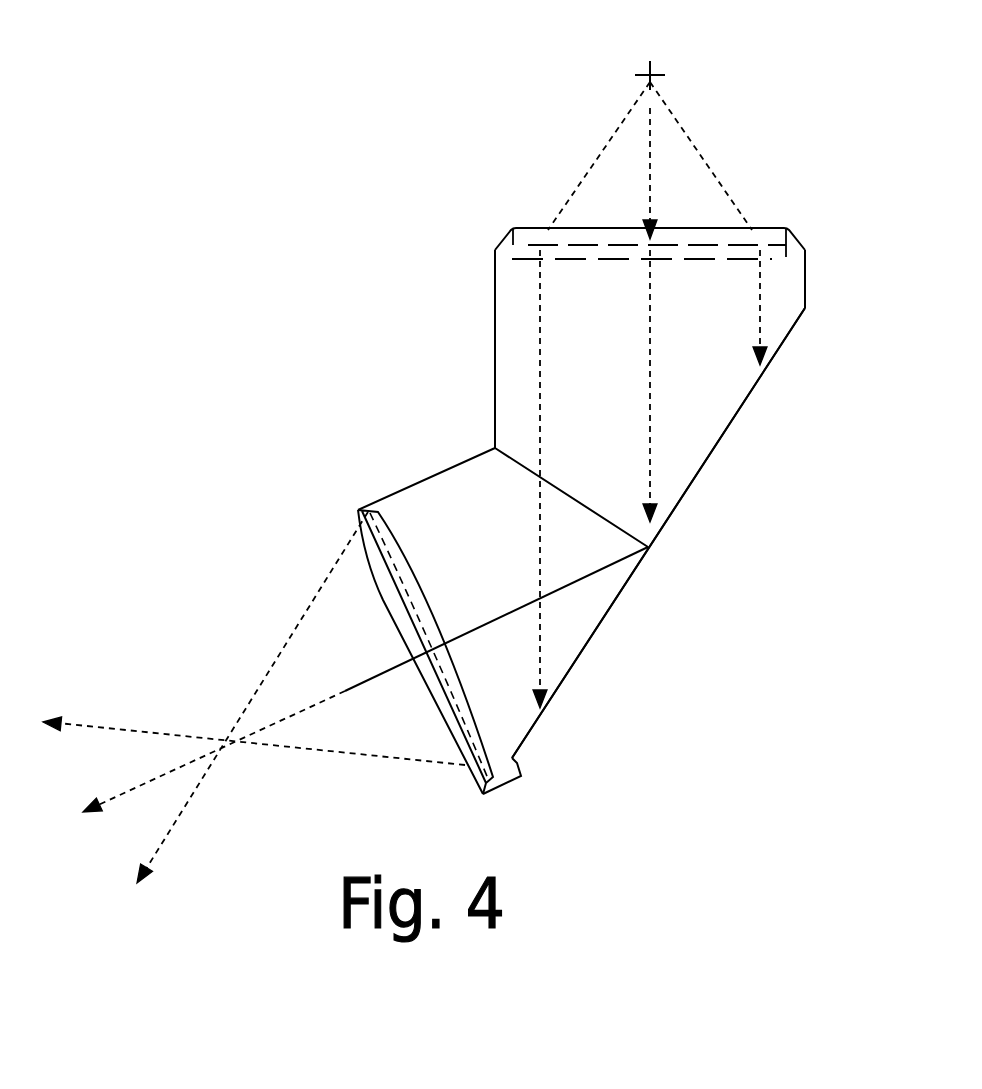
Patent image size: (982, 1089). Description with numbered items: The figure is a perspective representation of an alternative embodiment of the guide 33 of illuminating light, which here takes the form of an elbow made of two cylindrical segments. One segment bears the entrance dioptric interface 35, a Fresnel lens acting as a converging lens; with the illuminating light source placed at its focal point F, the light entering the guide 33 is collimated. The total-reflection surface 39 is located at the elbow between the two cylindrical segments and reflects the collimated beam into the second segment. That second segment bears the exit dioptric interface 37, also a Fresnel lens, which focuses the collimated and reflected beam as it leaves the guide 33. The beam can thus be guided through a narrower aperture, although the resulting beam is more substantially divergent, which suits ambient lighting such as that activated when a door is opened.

The guide of illuminating light 33 is at (754, 167).
The entrance dioptric interface 35 is at (535, 228).
The exit dioptric interface 37 is at (358, 508).
The total-reflection surface 39 is at (717, 443).